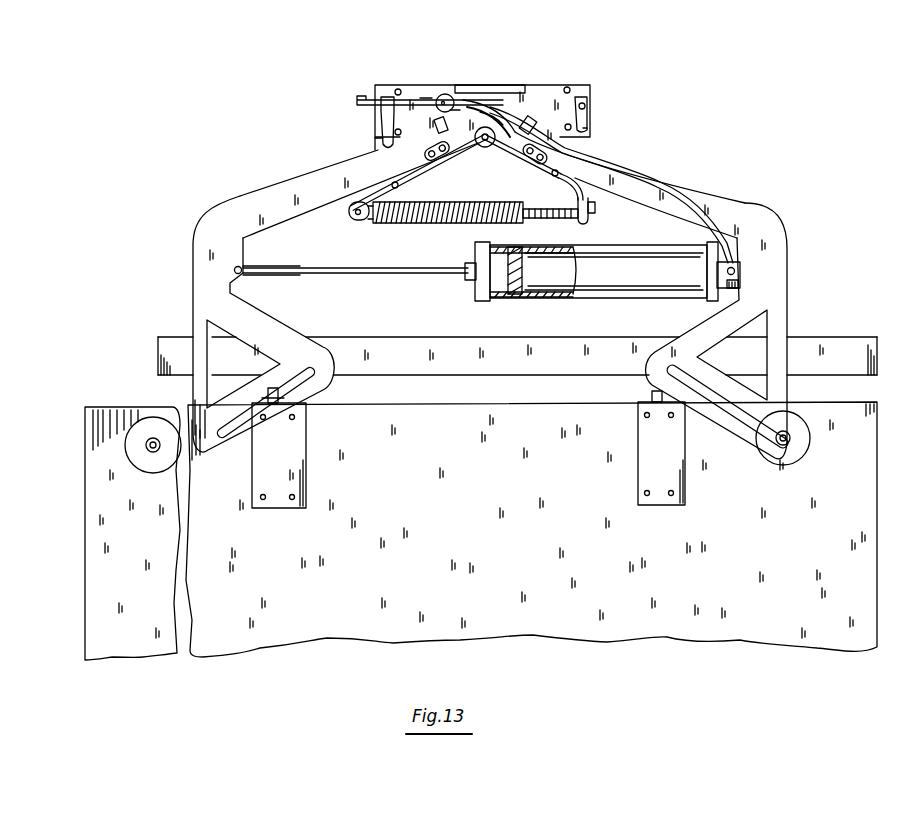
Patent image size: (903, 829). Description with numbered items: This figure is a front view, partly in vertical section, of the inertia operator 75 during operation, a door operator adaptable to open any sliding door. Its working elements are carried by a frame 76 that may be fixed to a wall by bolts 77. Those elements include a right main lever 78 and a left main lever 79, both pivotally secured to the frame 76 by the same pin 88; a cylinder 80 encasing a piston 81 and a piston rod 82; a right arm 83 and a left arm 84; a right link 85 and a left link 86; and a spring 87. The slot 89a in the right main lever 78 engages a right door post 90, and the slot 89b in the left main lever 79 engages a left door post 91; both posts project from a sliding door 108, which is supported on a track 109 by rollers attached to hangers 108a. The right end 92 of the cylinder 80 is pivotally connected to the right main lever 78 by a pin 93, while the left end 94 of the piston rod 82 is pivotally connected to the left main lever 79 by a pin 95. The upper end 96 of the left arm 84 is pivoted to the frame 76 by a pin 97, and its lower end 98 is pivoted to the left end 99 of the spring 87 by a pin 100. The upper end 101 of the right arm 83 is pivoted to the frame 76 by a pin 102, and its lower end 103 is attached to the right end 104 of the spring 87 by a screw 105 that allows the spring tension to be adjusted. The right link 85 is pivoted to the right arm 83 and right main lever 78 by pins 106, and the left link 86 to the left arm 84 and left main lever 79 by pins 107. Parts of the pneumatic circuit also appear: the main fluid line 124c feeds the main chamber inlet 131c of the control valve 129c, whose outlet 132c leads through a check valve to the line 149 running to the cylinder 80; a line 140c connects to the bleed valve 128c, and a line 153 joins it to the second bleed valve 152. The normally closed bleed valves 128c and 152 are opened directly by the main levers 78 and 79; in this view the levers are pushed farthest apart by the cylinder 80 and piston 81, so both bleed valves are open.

The inertia operator 75 is at (770, 217).
The frame 76 is at (591, 88).
The bolts 77 is at (398, 89).
The right main lever 78 is at (745, 200).
The left main lever 79 is at (300, 178).
The cylinder 80 is at (625, 292).
The piston 81 is at (545, 294).
The piston rod 82 is at (343, 275).
The right arm 83 is at (585, 130).
The left arm 84 is at (375, 138).
The right link 85 is at (548, 163).
The left link 86 is at (408, 178).
The spring 87 is at (440, 224).
The pin 88 is at (479, 113).
The slot 89a is at (785, 425).
The slot 89b is at (203, 450).
The right door post 90 is at (797, 445).
The left door post 91 is at (148, 442).
The right end 92 is at (705, 292).
The pin 93 is at (745, 271).
The left end 94 is at (288, 277).
The pin 95 is at (235, 268).
The upper end 96 is at (368, 99).
The pin 97 is at (388, 97).
The lower end 98 is at (348, 215).
The left end 99 is at (387, 224).
The pin 100 is at (355, 215).
The upper end 101 is at (590, 108).
The pin 102 is at (588, 97).
The lower end 103 is at (596, 207).
The right end 104 is at (540, 218).
The screw 105 is at (583, 224).
The pins 106 is at (555, 170).
The pins 107 is at (426, 153).
The sliding door 108 is at (85, 480).
The hangers 108a is at (290, 392).
The track 109 is at (165, 337).
The main fluid line 124c is at (428, 98).
The bleed valve 128c is at (528, 117).
The control valve 129c is at (449, 94).
The main chamber inlet 131c is at (443, 93).
The outlet 132c is at (456, 108).
The line 140c is at (478, 110).
The line 149 is at (648, 168).
The second bleed valve 152 is at (436, 125).
The line 153 is at (486, 147).